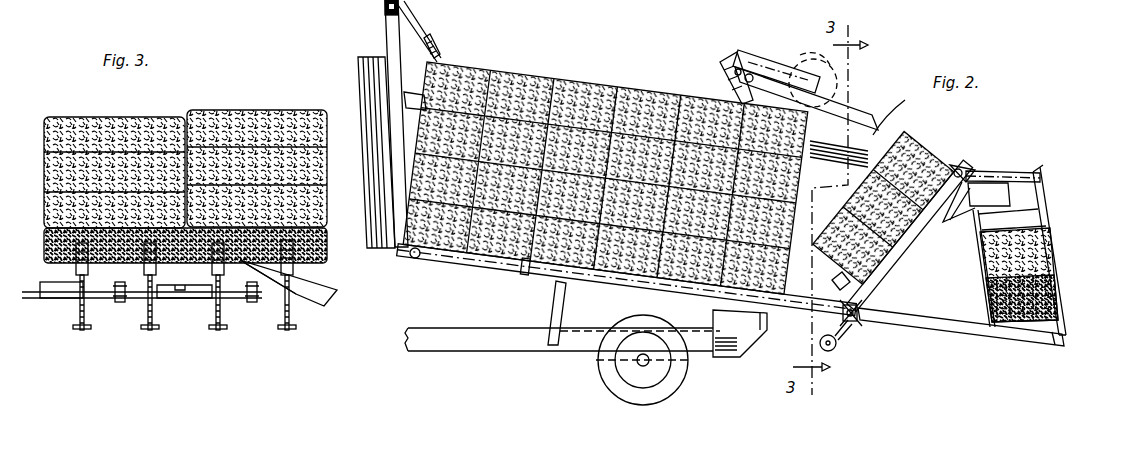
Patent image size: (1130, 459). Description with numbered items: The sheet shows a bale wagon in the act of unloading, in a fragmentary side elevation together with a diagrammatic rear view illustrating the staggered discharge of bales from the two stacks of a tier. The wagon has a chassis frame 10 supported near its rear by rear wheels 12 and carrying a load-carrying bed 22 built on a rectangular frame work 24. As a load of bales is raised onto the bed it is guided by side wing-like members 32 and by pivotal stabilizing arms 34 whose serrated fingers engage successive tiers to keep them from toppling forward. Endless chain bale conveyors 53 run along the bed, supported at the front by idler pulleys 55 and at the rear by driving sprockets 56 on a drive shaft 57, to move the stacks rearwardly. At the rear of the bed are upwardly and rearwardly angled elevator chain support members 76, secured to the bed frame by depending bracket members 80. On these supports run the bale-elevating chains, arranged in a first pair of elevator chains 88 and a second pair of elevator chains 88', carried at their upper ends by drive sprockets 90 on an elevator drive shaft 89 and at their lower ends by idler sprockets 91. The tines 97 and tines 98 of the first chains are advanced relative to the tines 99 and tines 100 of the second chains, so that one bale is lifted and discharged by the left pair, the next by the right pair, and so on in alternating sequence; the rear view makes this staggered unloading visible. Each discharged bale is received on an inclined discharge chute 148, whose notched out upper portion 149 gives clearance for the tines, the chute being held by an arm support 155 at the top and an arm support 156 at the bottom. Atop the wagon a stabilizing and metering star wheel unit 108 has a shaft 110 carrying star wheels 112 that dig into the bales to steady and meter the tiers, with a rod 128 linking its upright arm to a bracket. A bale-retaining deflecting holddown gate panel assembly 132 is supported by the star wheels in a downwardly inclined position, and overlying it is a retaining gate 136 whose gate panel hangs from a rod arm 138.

In FIG. 2, the chassis frame 10 is at (472, 352).
In FIG. 2, the rear wheels 12 is at (682, 372).
In FIG. 3, the load-carrying bed 22 is at (50, 286).
In FIG. 2, the load-carrying bed 22 is at (447, 296).
In FIG. 2, the rectangular frame work 24 is at (529, 280).
In FIG. 2, the side wing-like members 32 is at (364, 80).
In FIG. 2, the pivotal stabilizing arms 34 is at (421, 27).
In FIG. 3, the bale conveyors 53 is at (123, 302).
In FIG. 2, the bale conveyors 53 is at (494, 288).
In FIG. 2, the idler pulleys 55 is at (430, 266).
In FIG. 2, the driving sprockets 56 is at (854, 330).
In FIG. 2, the drive shaft 57 is at (877, 335).
In FIG. 2, the combination bale support and unloading elevator chain support members 76 is at (884, 280).
In FIG. 2, the depending bracket members 80 is at (956, 233).
In FIG. 3, the elevator chains 88 is at (97, 310).
In FIG. 2, the elevator chains 88 is at (942, 267).
In FIG. 3, the elevator chains 88' is at (256, 310).
In FIG. 2, the elevator drive shaft 89 is at (989, 194).
In FIG. 2, the drive sprockets 90 is at (960, 168).
In FIG. 3, the idler sprockets 91 is at (82, 333).
In FIG. 2, the idler sprockets 91 is at (840, 347).
In FIG. 3, the tines 97 is at (299, 262).
In FIG. 2, the tines 97 is at (966, 231).
In FIG. 3, the tines 98 is at (225, 261).
In FIG. 3, the tines 99 is at (158, 261).
In FIG. 3, the tines 100 is at (90, 264).
In FIG. 2, the tines 100 is at (988, 226).
In FIG. 2, the stabilizing and metering star wheel unit 108 is at (786, 58).
In FIG. 2, the shaft 110 is at (748, 79).
In FIG. 2, the star wheels 112 is at (822, 54).
In FIG. 2, the rod 128 is at (725, 90).
In FIG. 2, the bale-retaining deflecting holddown gate panel assembly 132 is at (856, 126).
In FIG. 2, the retaining gate 136 is at (870, 128).
In FIG. 2, the rod arm 138 is at (865, 123).
In FIG. 3, the inclined discharge chute 148 is at (322, 278).
In FIG. 2, the inclined discharge chute 148 is at (1044, 206).
In FIG. 2, the notched out upper portion 149 is at (1032, 198).
In FIG. 2, the arm support 155 is at (994, 172).
In FIG. 2, the arm support 156 is at (966, 332).